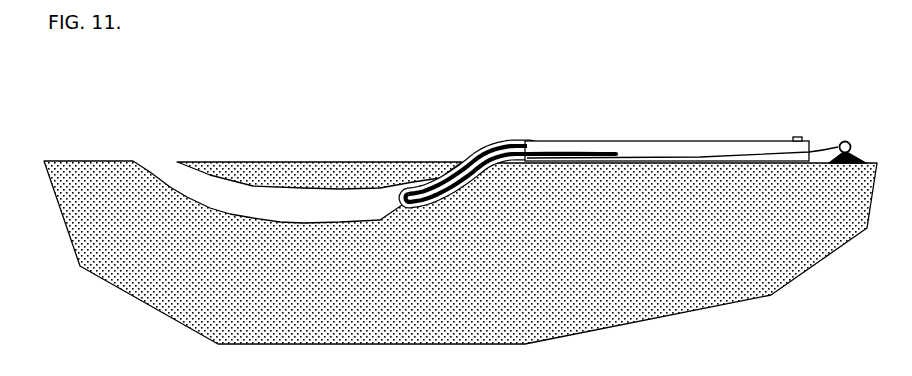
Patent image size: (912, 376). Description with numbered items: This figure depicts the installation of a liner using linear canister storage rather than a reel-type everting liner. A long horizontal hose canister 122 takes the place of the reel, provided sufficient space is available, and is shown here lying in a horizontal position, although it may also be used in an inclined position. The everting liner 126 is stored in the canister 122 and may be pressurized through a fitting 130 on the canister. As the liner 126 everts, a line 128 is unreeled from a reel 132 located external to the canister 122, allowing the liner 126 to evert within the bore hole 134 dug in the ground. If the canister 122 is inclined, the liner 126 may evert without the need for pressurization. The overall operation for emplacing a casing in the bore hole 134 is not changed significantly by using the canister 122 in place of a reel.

The horizontal hose canister 122 is at (604, 140).
The everting liner 126 is at (588, 117).
The line 128 is at (686, 157).
The fitting 130 is at (798, 137).
The reel 132 is at (842, 142).
The bore hole 134 is at (220, 187).